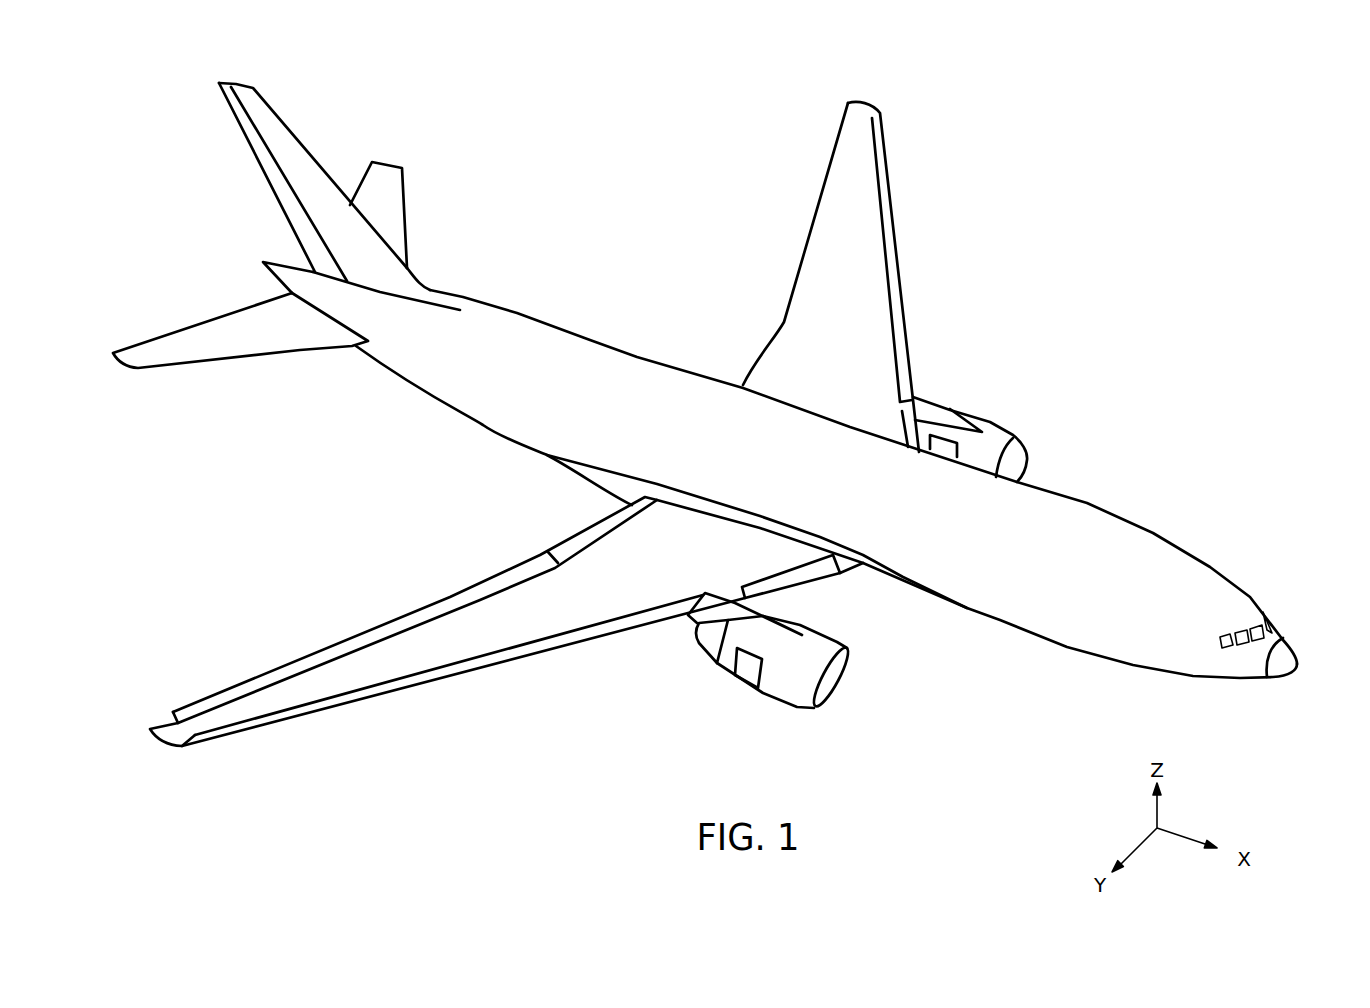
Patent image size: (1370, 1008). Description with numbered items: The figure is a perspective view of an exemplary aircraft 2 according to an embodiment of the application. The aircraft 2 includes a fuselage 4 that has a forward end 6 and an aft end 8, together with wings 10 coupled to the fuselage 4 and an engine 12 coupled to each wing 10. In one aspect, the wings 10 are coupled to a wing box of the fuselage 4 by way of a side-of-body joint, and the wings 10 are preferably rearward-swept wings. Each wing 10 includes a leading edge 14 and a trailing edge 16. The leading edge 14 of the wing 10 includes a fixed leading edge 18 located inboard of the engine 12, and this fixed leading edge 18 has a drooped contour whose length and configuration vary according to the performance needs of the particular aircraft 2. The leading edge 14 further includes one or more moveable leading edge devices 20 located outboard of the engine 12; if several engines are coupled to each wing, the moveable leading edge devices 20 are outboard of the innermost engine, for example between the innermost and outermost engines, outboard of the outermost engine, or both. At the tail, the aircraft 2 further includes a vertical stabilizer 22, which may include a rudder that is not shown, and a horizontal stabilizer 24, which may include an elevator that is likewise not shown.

The aircraft 2 is at (157, 163).
The fuselage 4 is at (635, 370).
The forward end 6 is at (1295, 667).
The aft end 8 is at (260, 268).
The wing 10 is at (805, 297).
The engine 12 is at (792, 707).
The leading edge 14 is at (627, 680).
The trailing edge 16 is at (367, 598).
The fixed leading edge 18 is at (798, 587).
The moveable leading edge device 20 is at (457, 677).
The vertical stabilizer 22 is at (232, 83).
The horizontal stabilizer 24 is at (385, 164).